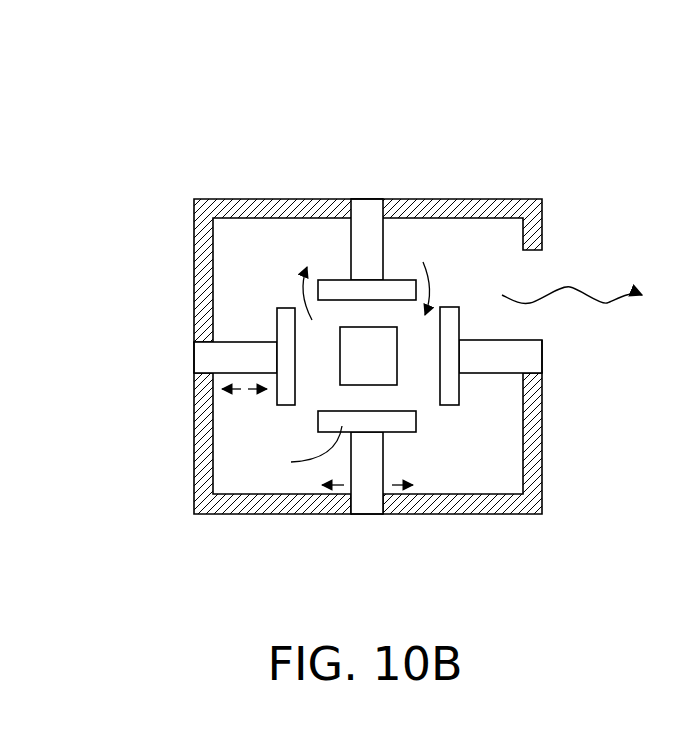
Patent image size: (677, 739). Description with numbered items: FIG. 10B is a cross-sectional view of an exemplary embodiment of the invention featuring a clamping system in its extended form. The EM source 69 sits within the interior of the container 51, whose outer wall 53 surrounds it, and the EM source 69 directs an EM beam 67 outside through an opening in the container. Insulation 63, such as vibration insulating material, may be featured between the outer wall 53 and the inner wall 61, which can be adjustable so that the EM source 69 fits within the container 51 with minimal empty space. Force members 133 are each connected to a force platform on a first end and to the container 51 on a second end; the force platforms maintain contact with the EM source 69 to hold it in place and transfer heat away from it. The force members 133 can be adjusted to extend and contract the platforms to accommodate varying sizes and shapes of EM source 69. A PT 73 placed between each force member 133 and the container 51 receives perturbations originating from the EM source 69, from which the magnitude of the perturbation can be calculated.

The container 51 is at (334, 326).
The outer wall 53 is at (445, 505).
The inner wall 61 is at (252, 217).
The insulation 63 is at (265, 504).
The EM beam 67 is at (594, 290).
The EM source 69 is at (372, 360).
The PT 73 is at (287, 328).
The force member 133 is at (373, 213).